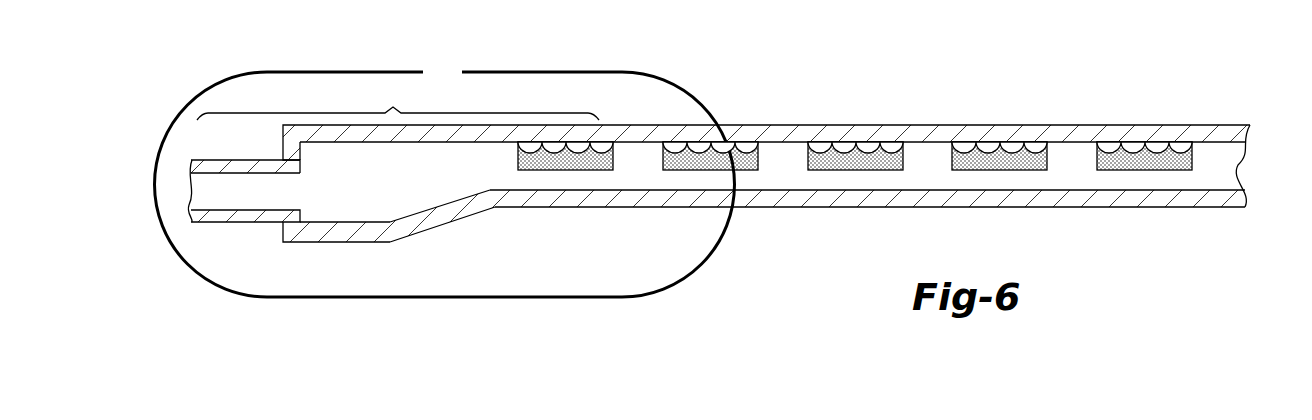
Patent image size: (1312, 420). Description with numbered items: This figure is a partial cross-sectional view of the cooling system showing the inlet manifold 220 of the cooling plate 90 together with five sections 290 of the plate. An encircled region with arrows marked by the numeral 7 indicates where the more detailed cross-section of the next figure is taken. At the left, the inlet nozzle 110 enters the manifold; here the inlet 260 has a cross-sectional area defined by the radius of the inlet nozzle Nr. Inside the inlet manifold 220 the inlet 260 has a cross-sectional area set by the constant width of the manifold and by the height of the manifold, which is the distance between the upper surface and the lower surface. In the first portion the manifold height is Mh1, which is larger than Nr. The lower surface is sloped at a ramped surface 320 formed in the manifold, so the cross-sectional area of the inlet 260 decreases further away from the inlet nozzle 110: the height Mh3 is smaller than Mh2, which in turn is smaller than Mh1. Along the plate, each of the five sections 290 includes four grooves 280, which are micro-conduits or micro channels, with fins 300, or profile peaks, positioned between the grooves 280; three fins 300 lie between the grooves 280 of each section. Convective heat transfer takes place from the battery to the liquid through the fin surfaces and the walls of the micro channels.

The section line 7 is at (442, 74).
The cooling plate 90 is at (1233, 161).
The inlet nozzle 110 is at (229, 222).
The inlet manifold 220 is at (822, 207).
The inlet 260 is at (398, 101).
The grooves 280 is at (1028, 148).
The sections 290 is at (1192, 220).
The fins 300 is at (853, 148).
The ramped surface 320 is at (407, 241).
The radius of the inlet nozzle Nr is at (270, 181).
The manifold height in first portion Mh1 is at (337, 151).
The manifold height in intermediate portion Mh2 is at (431, 151).
The manifold height in distal portion Mh3 is at (506, 151).